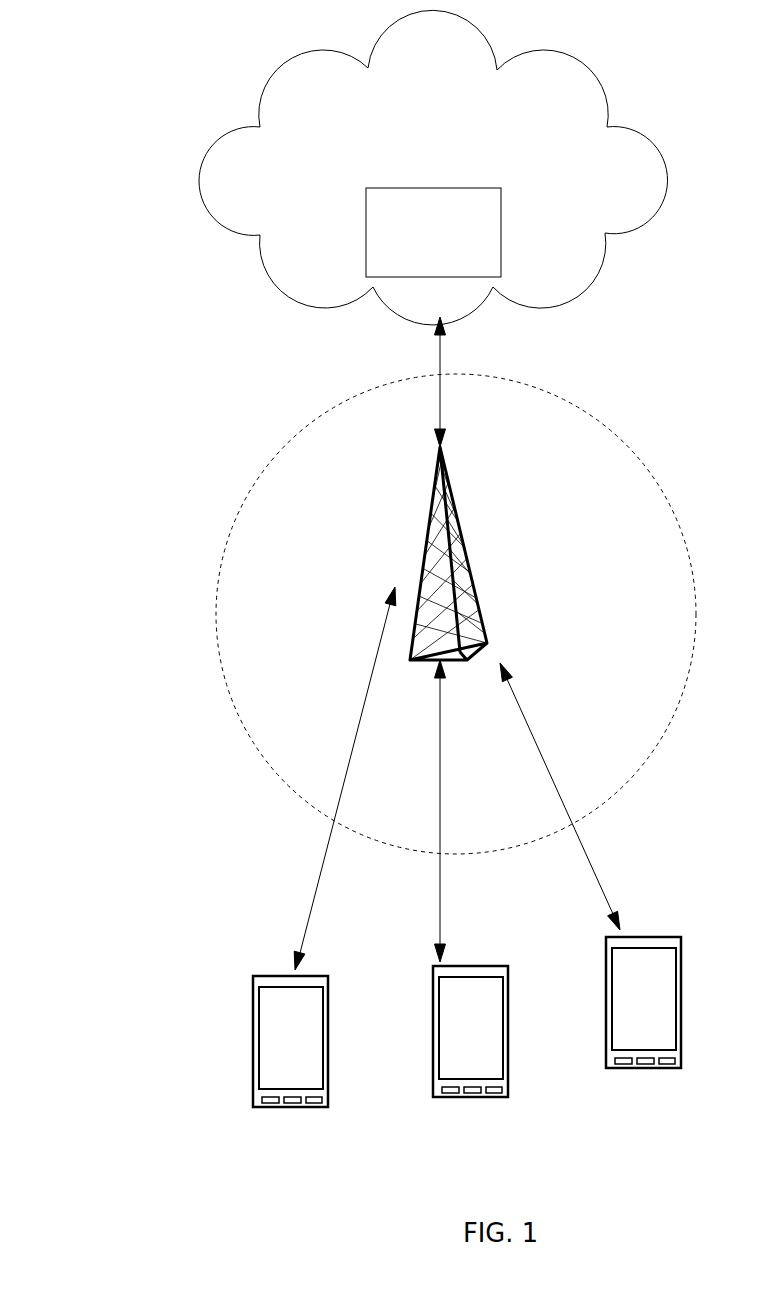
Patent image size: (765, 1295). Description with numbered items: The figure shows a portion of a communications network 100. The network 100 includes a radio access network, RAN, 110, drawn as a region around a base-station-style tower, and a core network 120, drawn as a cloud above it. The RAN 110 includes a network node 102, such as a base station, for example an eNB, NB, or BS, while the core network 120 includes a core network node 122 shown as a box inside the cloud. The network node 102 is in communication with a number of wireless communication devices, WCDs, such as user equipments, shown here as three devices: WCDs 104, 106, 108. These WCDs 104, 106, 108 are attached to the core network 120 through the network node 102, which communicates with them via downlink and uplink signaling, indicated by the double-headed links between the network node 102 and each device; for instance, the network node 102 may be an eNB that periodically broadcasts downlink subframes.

The communications network 100 is at (128, 110).
The network node 102 is at (411, 497).
The wireless communication device 104 is at (249, 998).
The wireless communication device 106 is at (430, 1010).
The wireless communication device 108 is at (603, 966).
The radio access network 110 is at (286, 421).
The core network 120 is at (260, 107).
The core network node 122 is at (366, 215).